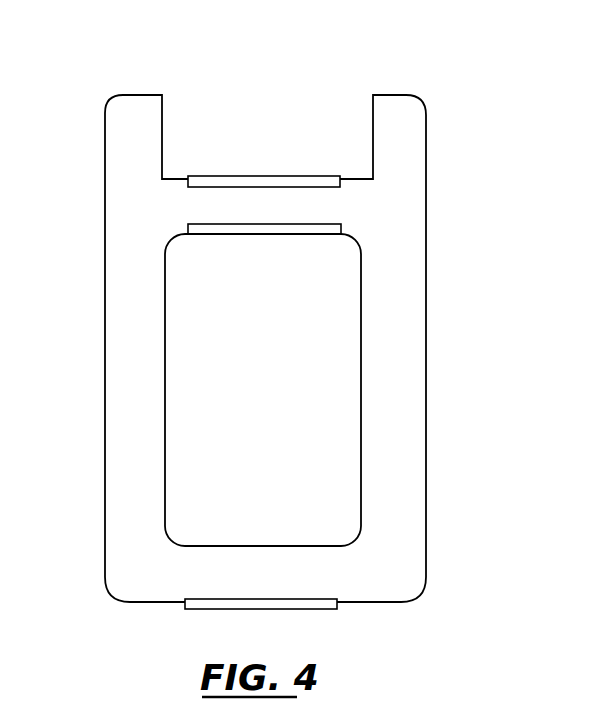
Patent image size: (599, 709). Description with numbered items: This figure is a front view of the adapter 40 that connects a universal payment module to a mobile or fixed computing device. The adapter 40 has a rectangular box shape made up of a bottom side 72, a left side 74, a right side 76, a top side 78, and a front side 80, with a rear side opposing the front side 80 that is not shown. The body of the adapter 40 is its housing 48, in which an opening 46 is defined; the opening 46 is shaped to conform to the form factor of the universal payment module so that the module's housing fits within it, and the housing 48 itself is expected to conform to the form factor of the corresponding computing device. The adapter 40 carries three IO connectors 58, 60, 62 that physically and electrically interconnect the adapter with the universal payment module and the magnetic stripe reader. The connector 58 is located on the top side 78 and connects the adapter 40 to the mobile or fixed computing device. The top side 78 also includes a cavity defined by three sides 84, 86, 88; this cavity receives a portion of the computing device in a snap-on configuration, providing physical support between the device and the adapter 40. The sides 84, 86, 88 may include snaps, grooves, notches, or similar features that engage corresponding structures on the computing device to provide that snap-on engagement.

The adapter 40 is at (453, 130).
The opening 46 is at (357, 325).
The housing 48 is at (421, 218).
The connector 58 is at (263, 176).
The IO connector 60 is at (270, 235).
The IO connector 62 is at (183, 608).
The bottom side 72 is at (130, 602).
The left side 74 is at (104, 412).
The right side 76 is at (420, 442).
The top side 78 is at (338, 76).
The front side 80 is at (397, 527).
The side 84 is at (162, 133).
The side 86 is at (177, 179).
The side 88 is at (369, 133).